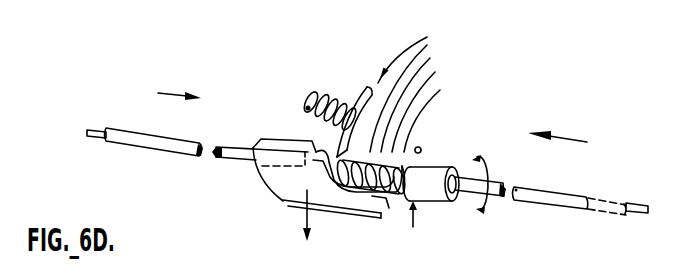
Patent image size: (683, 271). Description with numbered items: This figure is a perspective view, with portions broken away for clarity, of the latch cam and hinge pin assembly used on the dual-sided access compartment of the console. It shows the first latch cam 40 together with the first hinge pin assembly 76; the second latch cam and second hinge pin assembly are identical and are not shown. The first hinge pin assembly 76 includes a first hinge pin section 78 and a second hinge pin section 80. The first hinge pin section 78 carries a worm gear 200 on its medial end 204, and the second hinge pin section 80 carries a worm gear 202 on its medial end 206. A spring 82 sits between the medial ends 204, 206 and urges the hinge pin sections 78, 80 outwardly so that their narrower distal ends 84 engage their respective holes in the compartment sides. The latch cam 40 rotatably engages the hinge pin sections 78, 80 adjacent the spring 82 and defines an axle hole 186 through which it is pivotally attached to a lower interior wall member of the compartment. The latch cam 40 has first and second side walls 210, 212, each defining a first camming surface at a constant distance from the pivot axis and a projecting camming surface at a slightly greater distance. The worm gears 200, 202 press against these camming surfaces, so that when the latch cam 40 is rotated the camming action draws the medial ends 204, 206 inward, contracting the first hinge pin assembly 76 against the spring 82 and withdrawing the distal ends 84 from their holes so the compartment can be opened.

The first latch cam 40 is at (300, 178).
The first hinge pin assembly 76 is at (169, 95).
The first hinge pin section 78 is at (165, 153).
The second hinge pin section 80 is at (557, 208).
The spring 82 is at (362, 122).
The distal ends 84 is at (92, 137).
The axle hole 186 is at (423, 149).
The worm gear 200 is at (412, 226).
The worm gear 202 is at (419, 88).
The medial end 204 is at (302, 146).
The medial end 206 is at (411, 198).
The first side wall 210 is at (299, 72).
The second side wall 212 is at (425, 138).